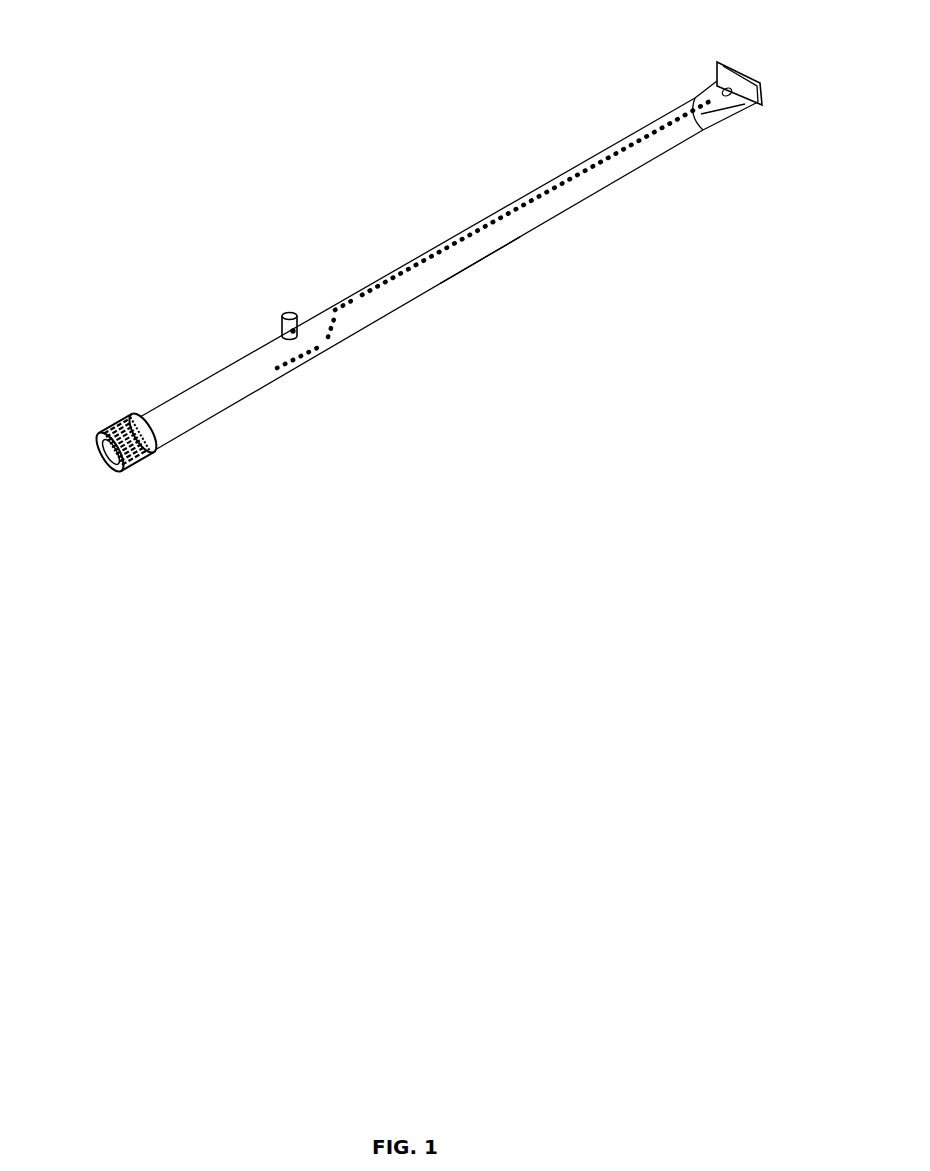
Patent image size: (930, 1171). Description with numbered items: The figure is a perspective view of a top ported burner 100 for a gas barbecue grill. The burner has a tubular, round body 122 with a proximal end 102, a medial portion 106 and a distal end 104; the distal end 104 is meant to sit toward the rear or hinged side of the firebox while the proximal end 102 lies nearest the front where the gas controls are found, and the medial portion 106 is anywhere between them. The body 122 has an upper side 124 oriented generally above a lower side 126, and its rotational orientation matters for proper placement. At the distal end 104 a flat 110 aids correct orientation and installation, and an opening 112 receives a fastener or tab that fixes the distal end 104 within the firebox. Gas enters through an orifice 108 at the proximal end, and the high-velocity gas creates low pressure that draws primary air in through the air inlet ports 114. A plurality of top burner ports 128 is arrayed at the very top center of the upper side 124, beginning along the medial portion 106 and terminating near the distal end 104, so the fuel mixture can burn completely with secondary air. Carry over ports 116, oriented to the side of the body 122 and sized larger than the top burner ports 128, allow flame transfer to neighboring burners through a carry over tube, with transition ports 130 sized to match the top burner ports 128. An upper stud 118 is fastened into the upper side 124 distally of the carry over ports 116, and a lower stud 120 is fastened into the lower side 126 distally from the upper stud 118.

The top ported burner 100 is at (178, 155).
The proximal end 102 is at (116, 483).
The distal end 104 is at (700, 79).
The medial portion 106 is at (502, 235).
The orifice 108 is at (100, 456).
The flat 110 is at (741, 107).
The opening 112 is at (713, 78).
The air inlet ports 114 is at (118, 421).
The carry over ports 116 is at (293, 368).
The upper stud 118 is at (285, 316).
The lower stud 120 is at (320, 352).
The body 122 is at (478, 278).
The upper side 124 is at (190, 390).
The lower side 126 is at (192, 431).
The top burner ports 128 is at (429, 248).
The transition ports 130 is at (338, 328).